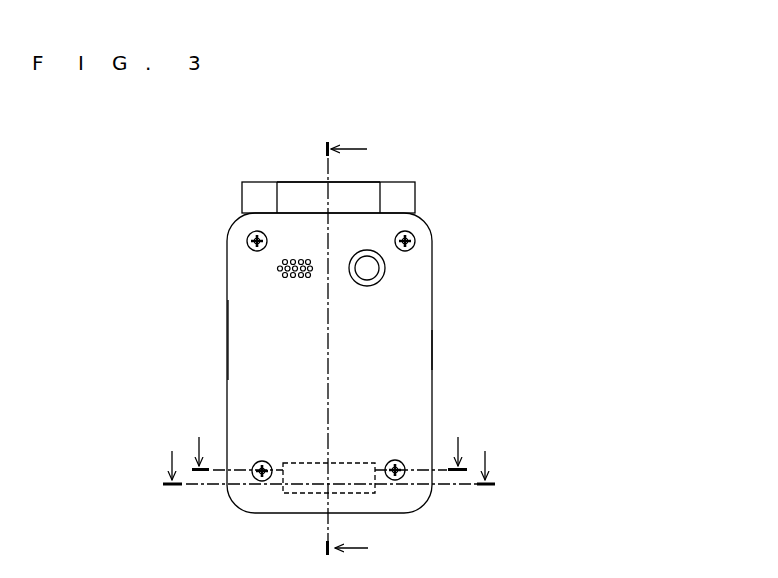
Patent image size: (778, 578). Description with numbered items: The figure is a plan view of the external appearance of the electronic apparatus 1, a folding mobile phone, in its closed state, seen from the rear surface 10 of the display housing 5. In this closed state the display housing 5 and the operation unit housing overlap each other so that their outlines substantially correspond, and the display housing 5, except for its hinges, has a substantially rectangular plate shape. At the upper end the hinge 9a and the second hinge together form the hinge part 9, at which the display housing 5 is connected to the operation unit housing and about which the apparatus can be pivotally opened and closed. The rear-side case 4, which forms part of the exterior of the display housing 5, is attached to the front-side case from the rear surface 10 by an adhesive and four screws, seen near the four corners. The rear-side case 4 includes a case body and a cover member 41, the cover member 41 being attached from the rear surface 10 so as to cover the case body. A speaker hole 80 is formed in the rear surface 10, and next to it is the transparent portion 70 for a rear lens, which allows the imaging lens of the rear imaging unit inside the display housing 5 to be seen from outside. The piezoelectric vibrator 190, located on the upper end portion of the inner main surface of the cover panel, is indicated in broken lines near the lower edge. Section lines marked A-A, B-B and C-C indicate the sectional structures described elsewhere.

The electronic apparatus 1 is at (449, 159).
The rear-side case 4 is at (236, 324).
The display housing 5 is at (456, 353).
The hinge part 9 is at (303, 140).
The hinge 9a is at (294, 193).
The rear surface 10 is at (422, 318).
The cover member 41 is at (236, 356).
The transparent portion for a rear lens 70 is at (386, 268).
The speaker hole 80 is at (276, 268).
The piezoelectric vibrator 190 is at (296, 494).